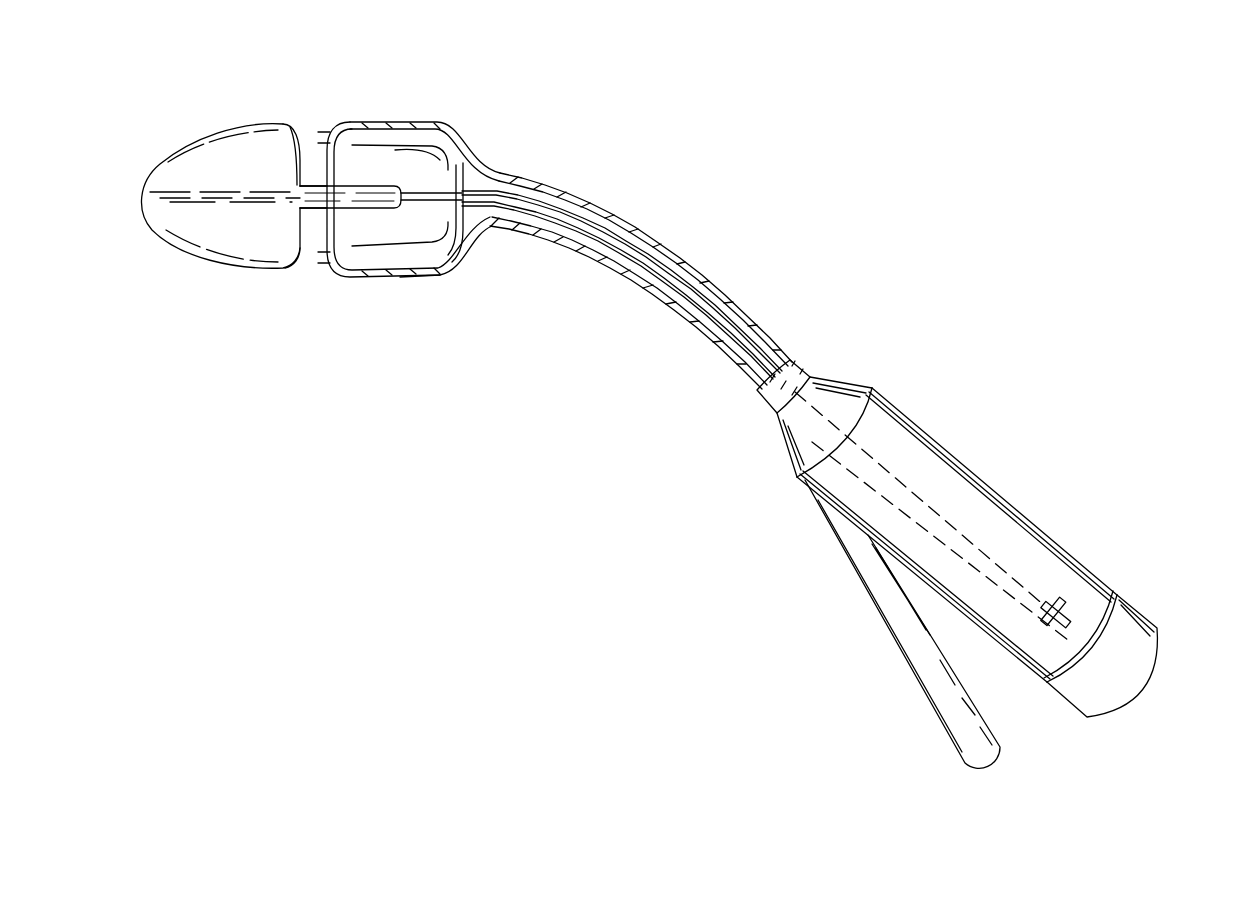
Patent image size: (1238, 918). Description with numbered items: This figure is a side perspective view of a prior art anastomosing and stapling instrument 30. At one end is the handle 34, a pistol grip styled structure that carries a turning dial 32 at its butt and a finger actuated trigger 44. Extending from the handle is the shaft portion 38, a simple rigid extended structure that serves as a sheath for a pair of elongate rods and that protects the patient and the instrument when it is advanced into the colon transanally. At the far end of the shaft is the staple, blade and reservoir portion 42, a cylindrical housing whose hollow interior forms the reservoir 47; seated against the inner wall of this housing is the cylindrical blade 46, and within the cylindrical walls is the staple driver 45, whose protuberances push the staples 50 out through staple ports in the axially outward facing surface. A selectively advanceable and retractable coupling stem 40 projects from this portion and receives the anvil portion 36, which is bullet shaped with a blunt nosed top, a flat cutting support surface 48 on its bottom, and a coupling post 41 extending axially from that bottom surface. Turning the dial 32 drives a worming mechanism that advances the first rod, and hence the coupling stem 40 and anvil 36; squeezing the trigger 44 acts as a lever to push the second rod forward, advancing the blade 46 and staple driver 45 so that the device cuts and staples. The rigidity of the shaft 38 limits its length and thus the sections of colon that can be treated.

The instrument 30 is at (817, 250).
The turning dial 32 is at (1138, 610).
The handle portion 34 is at (932, 460).
The anvil portion 36 is at (238, 150).
The shaft portion 38 is at (669, 277).
The coupling stem 40 is at (379, 197).
The coupling post 41 is at (312, 186).
The staple, blade and reservoir portion 42 is at (423, 123).
The trigger 44 is at (937, 718).
The staple driver 45 is at (440, 277).
The blade 46 is at (438, 178).
The reservoir 47 is at (440, 174).
The flat cutting support surface 48 is at (296, 268).
The staples 50 is at (330, 267).